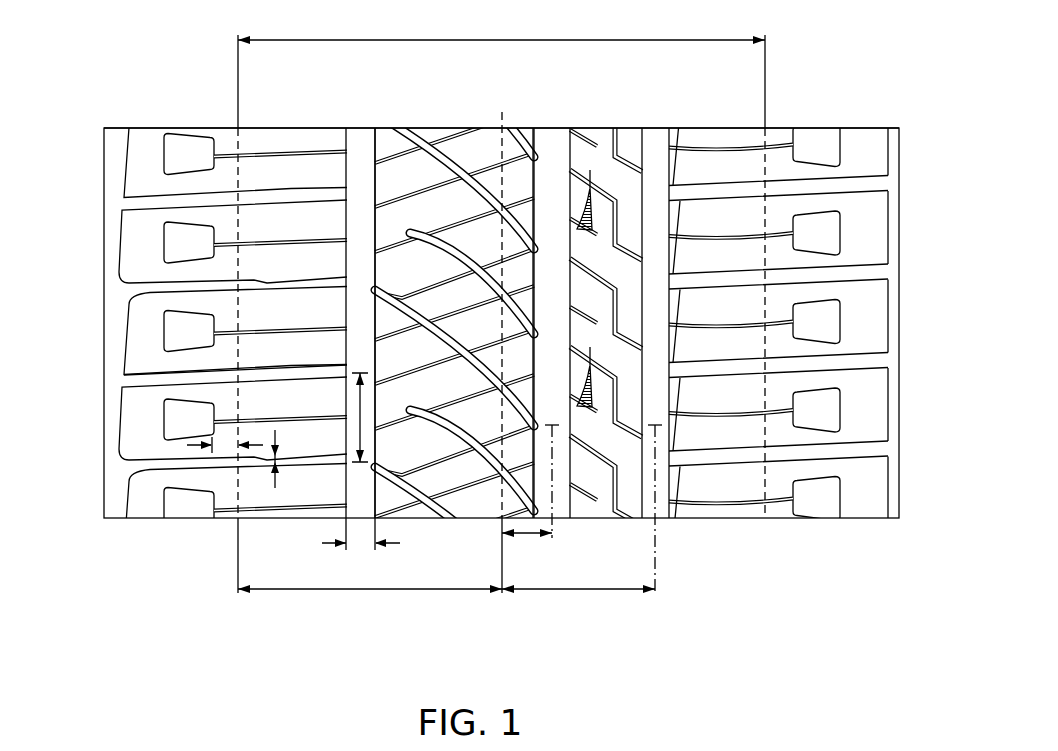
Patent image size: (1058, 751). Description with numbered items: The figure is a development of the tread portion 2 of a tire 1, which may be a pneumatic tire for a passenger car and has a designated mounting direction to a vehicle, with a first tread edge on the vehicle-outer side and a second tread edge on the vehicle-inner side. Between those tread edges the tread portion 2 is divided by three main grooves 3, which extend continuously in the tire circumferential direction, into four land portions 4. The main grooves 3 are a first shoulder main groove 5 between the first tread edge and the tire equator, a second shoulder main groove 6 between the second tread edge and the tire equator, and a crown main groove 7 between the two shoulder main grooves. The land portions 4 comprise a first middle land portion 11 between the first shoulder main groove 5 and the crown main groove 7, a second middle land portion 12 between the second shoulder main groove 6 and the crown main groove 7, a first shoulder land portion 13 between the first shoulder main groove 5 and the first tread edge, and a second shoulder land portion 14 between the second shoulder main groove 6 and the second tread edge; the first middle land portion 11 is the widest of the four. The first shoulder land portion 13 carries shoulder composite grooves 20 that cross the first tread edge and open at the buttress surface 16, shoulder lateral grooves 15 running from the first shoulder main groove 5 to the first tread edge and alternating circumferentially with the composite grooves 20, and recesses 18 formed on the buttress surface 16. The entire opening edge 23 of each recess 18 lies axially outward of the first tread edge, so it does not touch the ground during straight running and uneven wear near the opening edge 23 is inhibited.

The tire 1 is at (690, 120).
The tread portion 2 is at (323, 121).
The main grooves 3 is at (660, 466).
The land portions 4 is at (397, 181).
The first shoulder main groove 5 is at (361, 161).
The second shoulder main groove 6 is at (655, 161).
The crown main groove 7 is at (551, 161).
The first middle land portion 11 is at (471, 158).
The second middle land portion 12 is at (601, 161).
The first shoulder land portion 13 is at (289, 150).
The second shoulder land portion 14 is at (721, 173).
The shoulder lateral grooves 15 is at (291, 189).
The buttress surface 16 is at (146, 149).
The recess 18 is at (193, 330).
The shoulder composite grooves 20 is at (286, 238).
The opening edge 23 is at (292, 367).